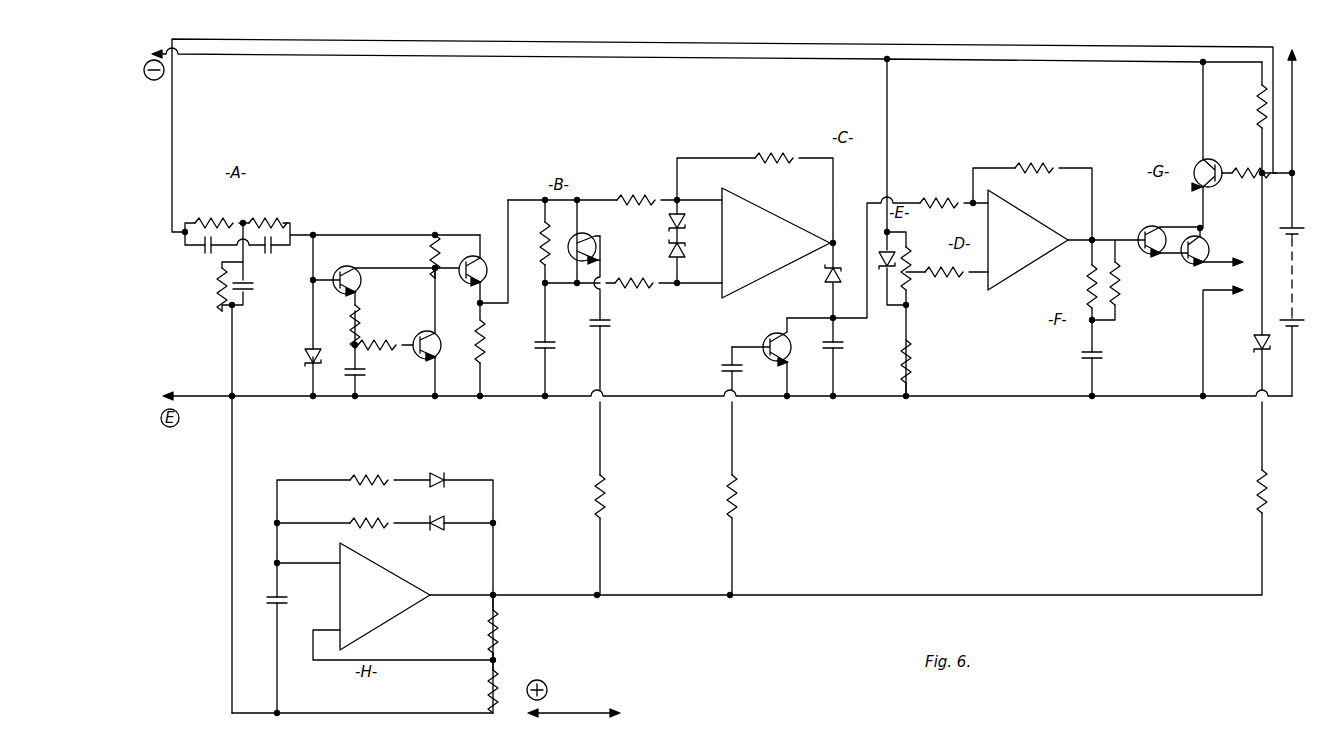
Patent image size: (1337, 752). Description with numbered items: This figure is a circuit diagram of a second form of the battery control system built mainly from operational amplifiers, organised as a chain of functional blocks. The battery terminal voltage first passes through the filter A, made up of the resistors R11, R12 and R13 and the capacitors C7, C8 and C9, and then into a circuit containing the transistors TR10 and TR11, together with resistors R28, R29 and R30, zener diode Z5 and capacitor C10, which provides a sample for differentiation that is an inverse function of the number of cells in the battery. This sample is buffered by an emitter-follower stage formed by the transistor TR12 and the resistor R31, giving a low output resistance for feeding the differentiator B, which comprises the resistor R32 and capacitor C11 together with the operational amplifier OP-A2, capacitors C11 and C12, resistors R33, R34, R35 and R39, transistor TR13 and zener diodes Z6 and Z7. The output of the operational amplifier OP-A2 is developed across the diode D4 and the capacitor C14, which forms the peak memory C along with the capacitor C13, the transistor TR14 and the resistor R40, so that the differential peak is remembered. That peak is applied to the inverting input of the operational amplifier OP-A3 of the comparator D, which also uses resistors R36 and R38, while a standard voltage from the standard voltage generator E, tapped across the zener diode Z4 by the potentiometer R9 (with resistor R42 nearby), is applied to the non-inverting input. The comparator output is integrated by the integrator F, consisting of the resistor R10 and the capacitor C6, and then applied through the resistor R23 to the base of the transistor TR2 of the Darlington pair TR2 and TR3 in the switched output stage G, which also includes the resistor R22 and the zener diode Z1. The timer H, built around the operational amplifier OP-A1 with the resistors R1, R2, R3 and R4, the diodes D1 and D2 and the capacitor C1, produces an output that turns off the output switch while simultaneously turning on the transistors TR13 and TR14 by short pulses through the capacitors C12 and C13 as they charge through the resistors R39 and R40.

The resistor R1 is at (488, 682).
The resistor R2 is at (500, 626).
The resistor R3 is at (369, 512).
The resistor R4 is at (369, 469).
The potentiometer R9 is at (912, 290).
The resistor R10 is at (1088, 292).
The resistor R11 is at (208, 216).
The resistor R12 is at (272, 216).
The resistor R13 is at (218, 290).
The resistor R22 is at (1236, 165).
The resistor R23 is at (1122, 283).
The resistor R28 is at (437, 250).
The resistor R29 is at (360, 312).
The resistor R30 is at (385, 343).
The resistor R31 is at (490, 326).
The resistor R32 is at (542, 230).
The resistor R33 is at (635, 196).
The resistor R34 is at (632, 290).
The resistor R35 is at (774, 146).
The resistor R36 is at (945, 190).
The resistor R38 is at (1032, 192).
The resistor R39 is at (605, 498).
The resistor R40 is at (738, 498).
The resistor R42 is at (913, 352).
The capacitor C1 is at (266, 612).
The capacitor C6 is at (1080, 362).
The capacitor C7 is at (200, 258).
The capacitor C8 is at (270, 258).
The capacitor C9 is at (250, 290).
The capacitor C10 is at (344, 372).
The capacitor C11 is at (530, 352).
The capacitor C12 is at (607, 330).
The capacitor C13 is at (718, 368).
The capacitor C14 is at (842, 352).
The diode D1 is at (440, 515).
The diode D2 is at (440, 472).
The diode D4 is at (824, 282).
The zener diode Z1 is at (1256, 338).
The zener diode Z4 is at (896, 250).
The zener diode Z5 is at (302, 363).
The zener diode Z6 is at (683, 210).
The zener diode Z7 is at (682, 265).
The transistor TR2 is at (1160, 218).
The transistor TR3 is at (1202, 238).
The transistor TR10 is at (342, 272).
The transistor TR11 is at (420, 360).
The transistor TR12 is at (475, 250).
The transistor TR13 is at (612, 226).
The transistor TR14 is at (768, 340).
The operational amplifier OP-A1 is at (385, 596).
The operational amplifier OP-A2 is at (776, 243).
The operational amplifier OP-A3 is at (1028, 240).